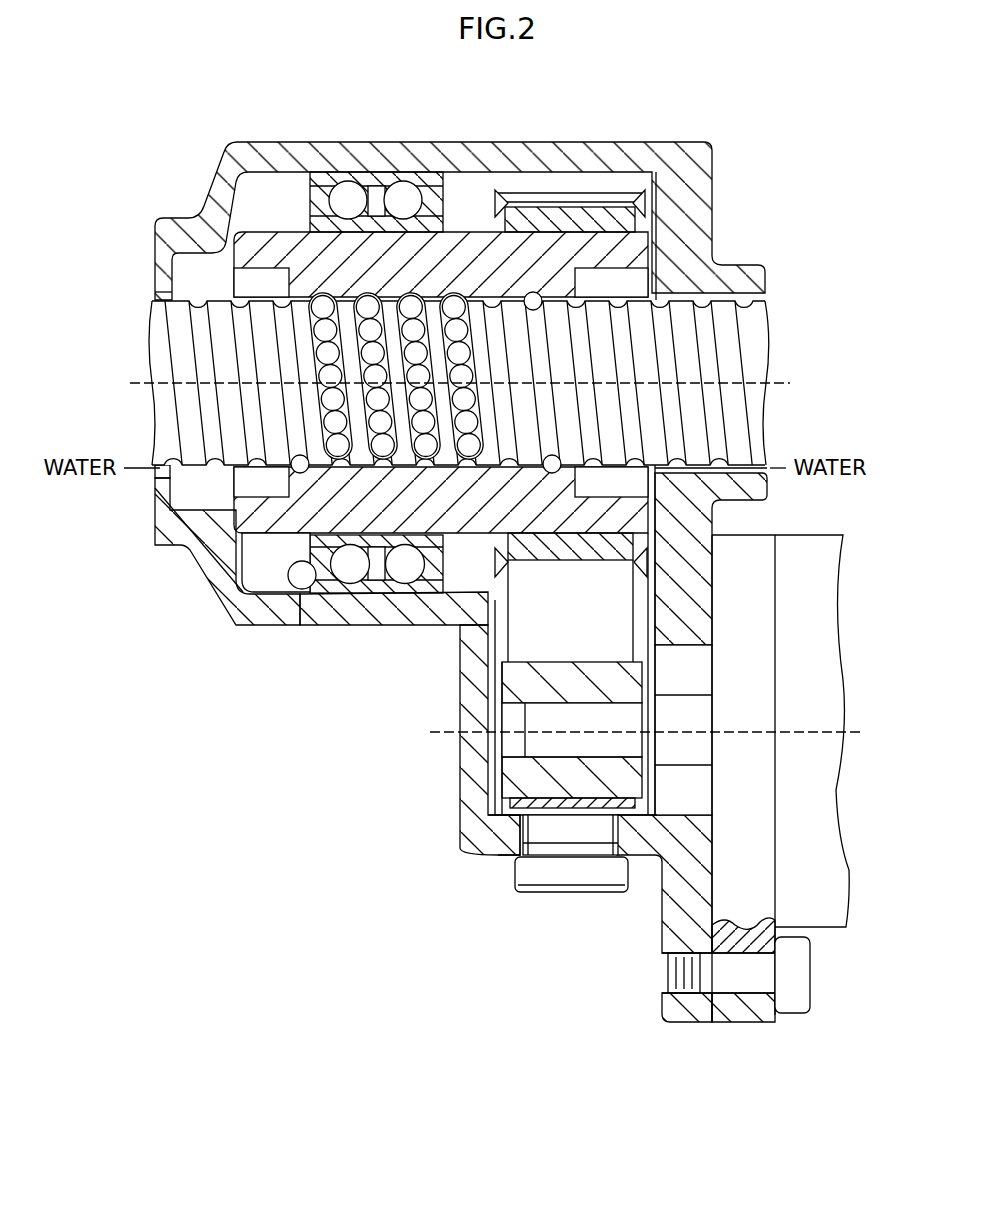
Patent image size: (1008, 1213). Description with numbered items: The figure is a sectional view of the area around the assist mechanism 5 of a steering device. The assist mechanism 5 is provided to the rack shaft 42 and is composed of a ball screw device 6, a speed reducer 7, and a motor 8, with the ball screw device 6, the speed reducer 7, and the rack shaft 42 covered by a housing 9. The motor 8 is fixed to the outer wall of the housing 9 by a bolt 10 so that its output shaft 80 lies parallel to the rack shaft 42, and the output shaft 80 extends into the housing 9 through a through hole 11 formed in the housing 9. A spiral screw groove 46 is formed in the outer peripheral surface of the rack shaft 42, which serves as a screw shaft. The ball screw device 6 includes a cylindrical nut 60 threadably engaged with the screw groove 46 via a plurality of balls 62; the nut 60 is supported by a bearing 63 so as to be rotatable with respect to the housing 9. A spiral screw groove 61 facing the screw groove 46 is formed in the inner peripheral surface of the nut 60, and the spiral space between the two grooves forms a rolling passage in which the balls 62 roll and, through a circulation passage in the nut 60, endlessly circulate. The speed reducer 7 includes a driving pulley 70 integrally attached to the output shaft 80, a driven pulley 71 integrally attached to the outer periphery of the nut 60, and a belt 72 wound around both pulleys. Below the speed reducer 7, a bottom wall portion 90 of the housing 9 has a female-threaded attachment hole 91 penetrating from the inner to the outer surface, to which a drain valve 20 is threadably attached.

The assist mechanism 5 is at (720, 153).
The housing 9 is at (575, 142).
The driven pulley 71 is at (490, 220).
The rack shaft 42 is at (160, 302).
The screw groove 46 is at (190, 357).
The screw groove 61 is at (386, 474).
The balls 62 is at (428, 472).
The nut 60 is at (283, 540).
The ball screw device 6 is at (212, 578).
The bearing 63 is at (298, 600).
The speed reducer 7 is at (495, 628).
The belt 72 is at (494, 660).
The through hole 11 is at (698, 651).
The driving pulley 70 is at (470, 773).
The output shaft 80 is at (700, 770).
The bottom wall portion 90 is at (478, 858).
The attachment hole 91 is at (527, 852).
The drain valve 20 is at (568, 894).
The motor 8 is at (836, 930).
The bolt 10 is at (810, 985).